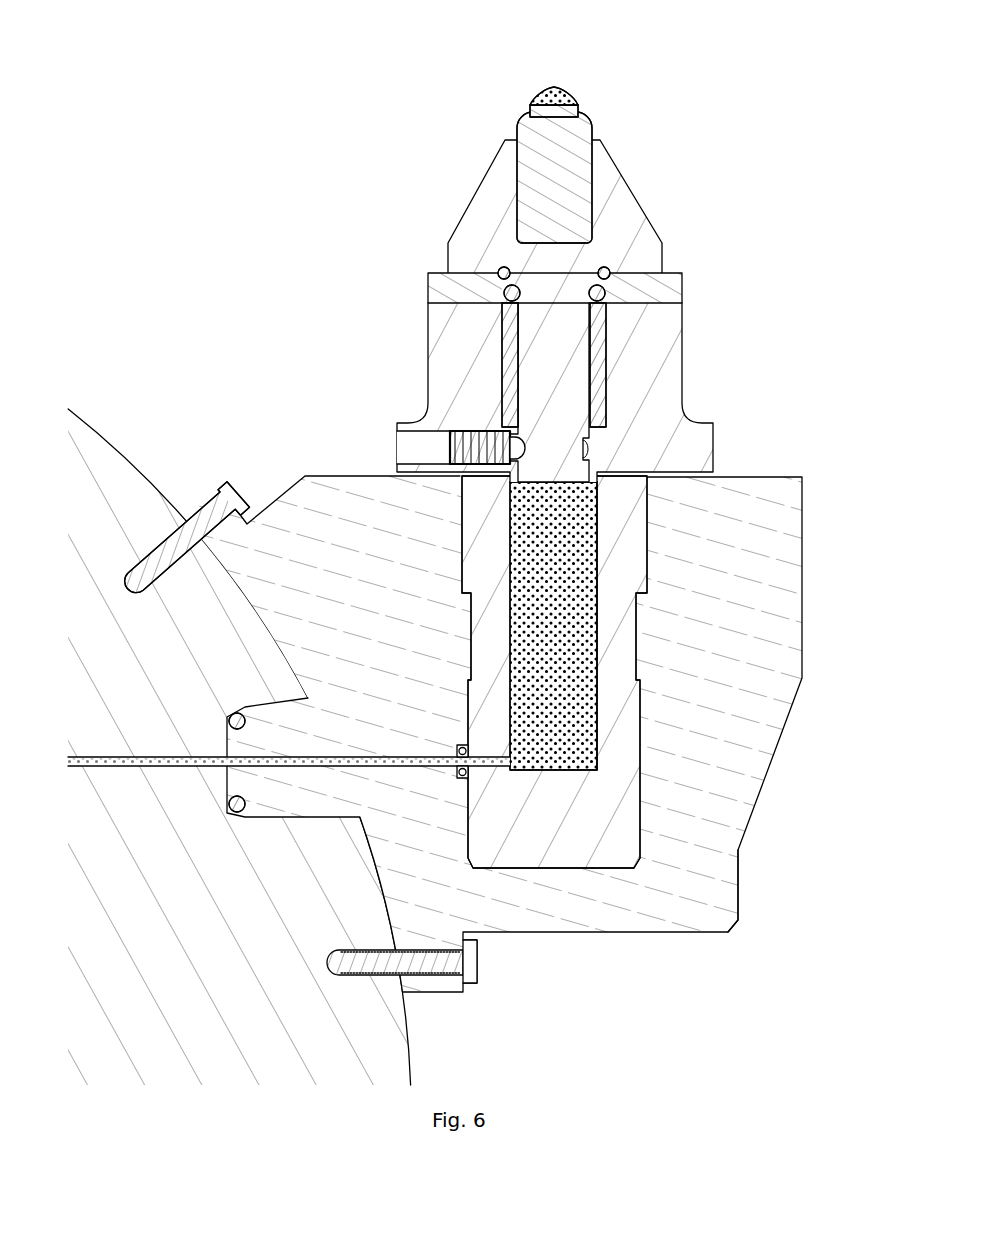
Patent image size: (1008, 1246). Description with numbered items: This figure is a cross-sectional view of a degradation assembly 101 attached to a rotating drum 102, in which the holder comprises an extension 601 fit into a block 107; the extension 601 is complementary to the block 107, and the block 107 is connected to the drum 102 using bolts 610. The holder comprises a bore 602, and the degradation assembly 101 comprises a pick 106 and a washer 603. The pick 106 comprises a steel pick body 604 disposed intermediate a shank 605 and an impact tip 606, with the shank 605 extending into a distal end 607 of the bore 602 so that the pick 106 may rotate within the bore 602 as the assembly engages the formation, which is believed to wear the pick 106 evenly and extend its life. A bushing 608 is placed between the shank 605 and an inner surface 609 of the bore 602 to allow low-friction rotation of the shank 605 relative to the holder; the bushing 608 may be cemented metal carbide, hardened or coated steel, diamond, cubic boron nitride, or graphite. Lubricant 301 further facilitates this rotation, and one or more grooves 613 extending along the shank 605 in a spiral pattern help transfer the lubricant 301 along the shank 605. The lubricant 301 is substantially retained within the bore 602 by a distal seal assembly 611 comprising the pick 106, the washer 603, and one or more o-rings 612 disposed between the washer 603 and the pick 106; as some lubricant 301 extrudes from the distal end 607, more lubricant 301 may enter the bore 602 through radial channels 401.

The degradation assembly 101 is at (378, 63).
The rotating drum 102 is at (134, 466).
The pick 106 is at (636, 244).
The block 107 is at (738, 920).
The lubricant 301 is at (553, 755).
The radial channels 401 is at (171, 769).
The extension 601 is at (640, 800).
The bore 602 is at (496, 710).
The washer 603 is at (703, 291).
The steel pick body 604 is at (647, 217).
The shank 605 is at (515, 360).
The impact tip 606 is at (595, 84).
The distal end 607 is at (377, 289).
The bushing 608 is at (233, 713).
The inner surface 609 is at (598, 556).
The bolts 610 is at (233, 484).
The distal seal assembly 611 is at (392, 240).
The o-rings 612 is at (607, 279).
The grooves 613 is at (515, 406).